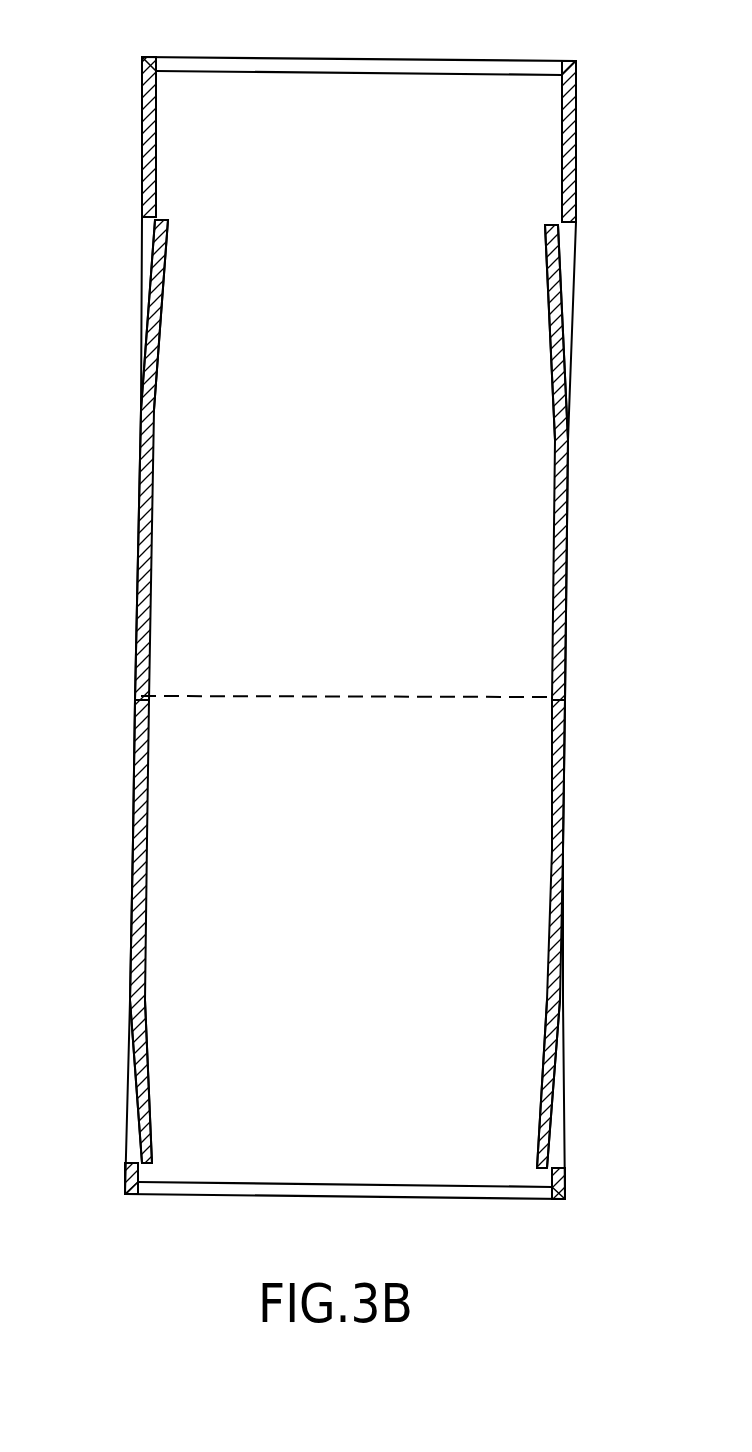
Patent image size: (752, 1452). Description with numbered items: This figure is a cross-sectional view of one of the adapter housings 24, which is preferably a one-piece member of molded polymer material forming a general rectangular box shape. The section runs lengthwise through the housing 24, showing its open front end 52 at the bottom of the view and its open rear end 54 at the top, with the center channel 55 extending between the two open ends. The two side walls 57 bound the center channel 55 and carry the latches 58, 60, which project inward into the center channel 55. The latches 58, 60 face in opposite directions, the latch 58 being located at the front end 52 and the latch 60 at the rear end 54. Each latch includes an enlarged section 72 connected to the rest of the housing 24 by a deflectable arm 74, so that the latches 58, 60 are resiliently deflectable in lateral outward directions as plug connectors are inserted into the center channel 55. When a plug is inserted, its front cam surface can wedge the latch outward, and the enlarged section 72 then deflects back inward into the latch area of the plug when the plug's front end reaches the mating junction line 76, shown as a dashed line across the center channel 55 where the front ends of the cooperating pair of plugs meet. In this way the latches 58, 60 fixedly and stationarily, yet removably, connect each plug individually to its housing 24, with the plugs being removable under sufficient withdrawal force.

The housing 24 is at (346, 625).
The front end 52 is at (350, 1198).
The rear end 54 is at (327, 58).
The center channel 55 is at (346, 668).
The side wall 57 is at (134, 836).
The latch 58 is at (141, 1056).
The latch 60 is at (159, 347).
The enlarged section 72 is at (166, 258).
The deflectable arm 74 is at (152, 389).
The mating junction line 76 is at (312, 700).